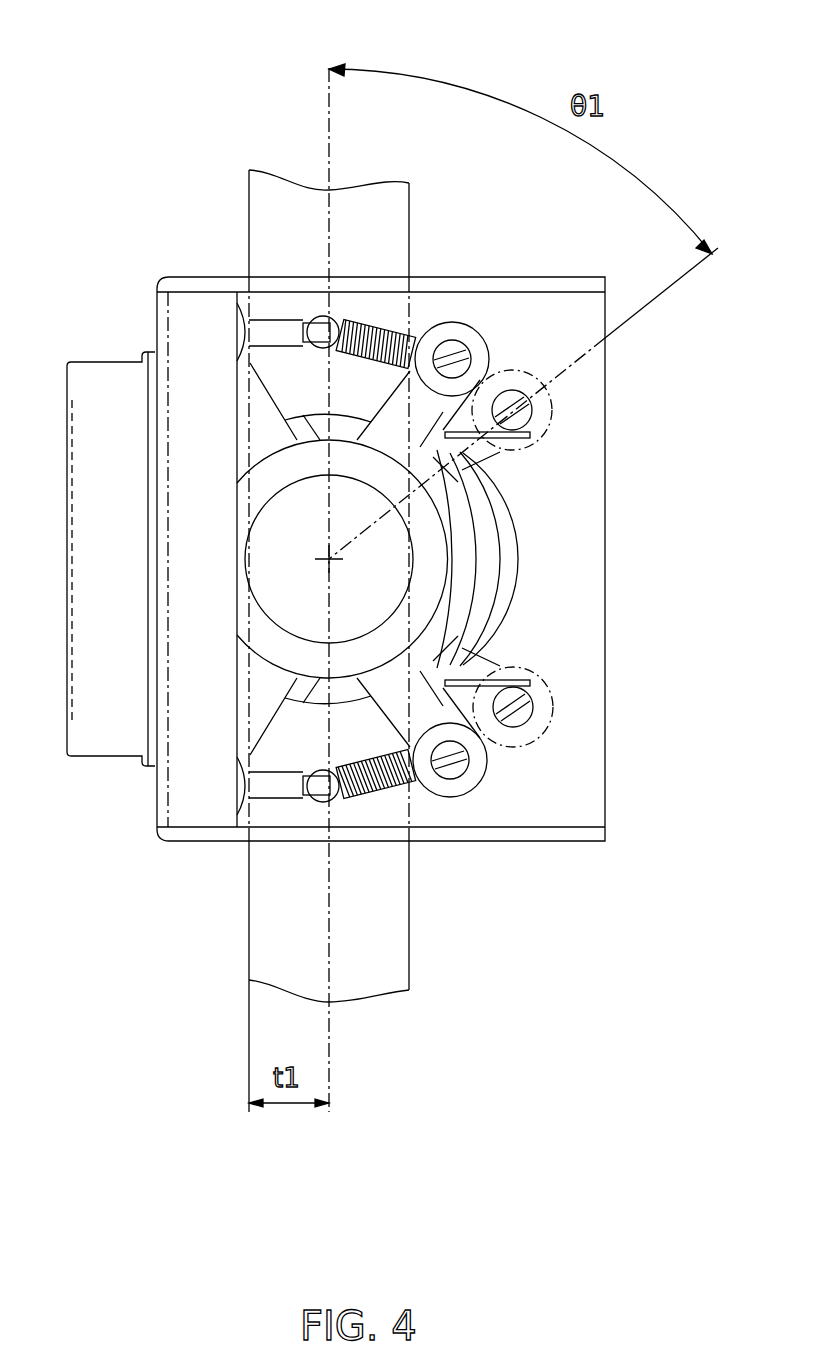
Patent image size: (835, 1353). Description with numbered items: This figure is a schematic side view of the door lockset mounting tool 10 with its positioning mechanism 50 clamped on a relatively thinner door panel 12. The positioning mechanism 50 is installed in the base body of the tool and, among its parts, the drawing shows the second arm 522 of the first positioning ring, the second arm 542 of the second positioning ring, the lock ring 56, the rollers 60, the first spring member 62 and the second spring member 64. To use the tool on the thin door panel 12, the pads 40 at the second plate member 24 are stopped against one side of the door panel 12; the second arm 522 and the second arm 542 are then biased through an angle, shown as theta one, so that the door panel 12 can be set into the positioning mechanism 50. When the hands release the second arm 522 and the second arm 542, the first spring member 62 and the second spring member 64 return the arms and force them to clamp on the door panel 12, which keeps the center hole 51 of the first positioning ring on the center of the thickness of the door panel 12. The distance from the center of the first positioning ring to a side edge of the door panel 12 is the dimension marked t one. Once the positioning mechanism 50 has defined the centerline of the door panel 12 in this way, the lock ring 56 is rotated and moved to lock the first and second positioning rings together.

The door lockset mounting tool 10 is at (701, 99).
The door panel 12 is at (406, 180).
The second plate member 24 is at (190, 397).
The pads 40 is at (238, 322).
The positioning mechanism 50 is at (519, 573).
The center hole 51 is at (390, 577).
The lock ring 56 is at (483, 557).
The rollers 60 is at (233, 367).
The first spring member 62 is at (405, 315).
The second spring member 64 is at (551, 774).
The second arm 522 is at (487, 455).
The second arm 542 is at (503, 662).